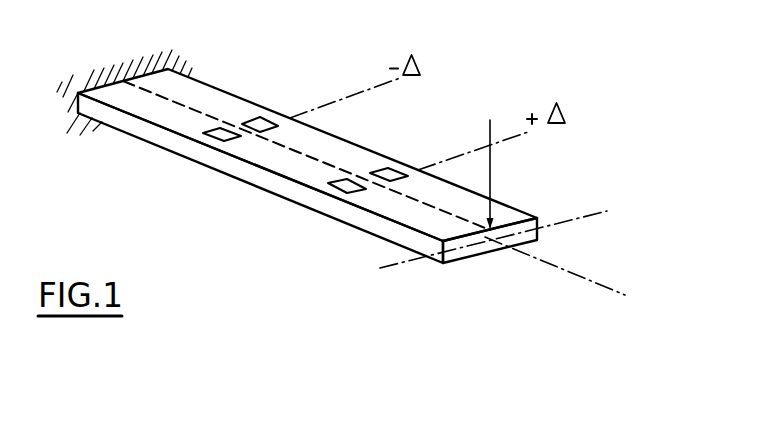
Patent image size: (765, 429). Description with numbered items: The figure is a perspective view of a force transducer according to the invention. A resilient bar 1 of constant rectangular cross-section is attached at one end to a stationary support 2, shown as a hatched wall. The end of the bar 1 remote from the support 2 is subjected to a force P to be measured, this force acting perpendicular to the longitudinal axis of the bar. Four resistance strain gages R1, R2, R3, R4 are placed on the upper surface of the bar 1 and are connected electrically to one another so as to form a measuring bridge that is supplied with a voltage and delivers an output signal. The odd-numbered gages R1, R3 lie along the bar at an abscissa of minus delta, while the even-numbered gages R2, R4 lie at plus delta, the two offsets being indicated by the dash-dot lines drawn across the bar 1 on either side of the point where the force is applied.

The resilient bar 1 is at (330, 142).
The stationary support 2 is at (143, 68).
The resistance strain gage R1 is at (262, 118).
The resistance strain gage R2 is at (393, 172).
The resistance strain gage R3 is at (213, 137).
The resistance strain gage R4 is at (342, 190).